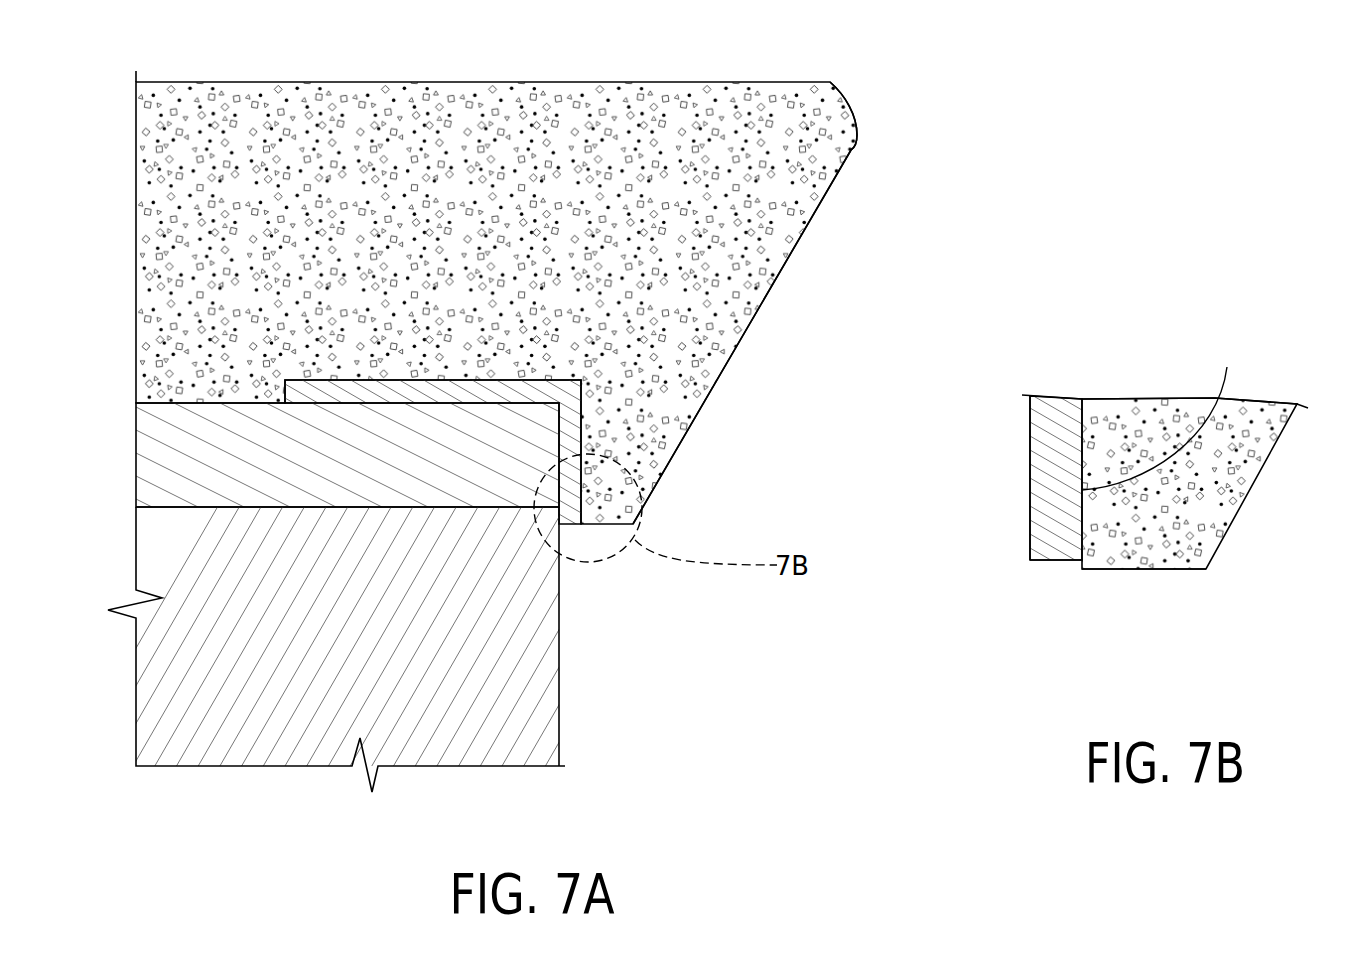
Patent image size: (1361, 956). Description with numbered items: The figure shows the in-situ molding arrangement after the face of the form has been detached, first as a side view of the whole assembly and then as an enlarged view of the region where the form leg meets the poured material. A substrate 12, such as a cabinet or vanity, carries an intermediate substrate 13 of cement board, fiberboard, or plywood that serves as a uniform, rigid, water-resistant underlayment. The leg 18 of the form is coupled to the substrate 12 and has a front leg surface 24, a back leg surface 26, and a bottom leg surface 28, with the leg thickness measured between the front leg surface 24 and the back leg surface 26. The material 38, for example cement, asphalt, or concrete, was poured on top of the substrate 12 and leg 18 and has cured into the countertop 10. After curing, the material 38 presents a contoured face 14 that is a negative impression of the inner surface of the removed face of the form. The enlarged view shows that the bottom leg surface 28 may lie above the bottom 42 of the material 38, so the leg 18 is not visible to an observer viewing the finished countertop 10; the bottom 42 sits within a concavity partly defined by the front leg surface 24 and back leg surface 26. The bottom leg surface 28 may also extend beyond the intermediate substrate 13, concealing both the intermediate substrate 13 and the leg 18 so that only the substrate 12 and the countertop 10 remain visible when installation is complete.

In FIG. 7A, the countertop 10 is at (507, 135).
In FIG. 7A, the substrate 12 is at (465, 736).
In FIG. 7A, the intermediate substrate 13 is at (203, 435).
In FIG. 7A, the contoured face 14 is at (738, 343).
In FIG. 7A, the leg 18 is at (583, 418).
In FIG. 7B, the leg 18 is at (1053, 537).
In FIG. 7B, the front leg surface 24 is at (1159, 414).
In FIG. 7B, the back leg surface 26 is at (1030, 492).
In FIG. 7B, the bottom leg surface 28 is at (1052, 562).
In FIG. 7A, the material 38 is at (831, 137).
In FIG. 7B, the material 38 is at (1210, 475).
In FIG. 7B, the bottom 42 is at (1177, 569).